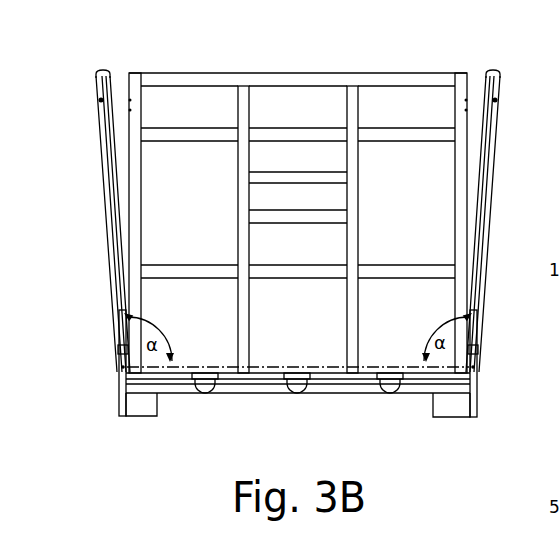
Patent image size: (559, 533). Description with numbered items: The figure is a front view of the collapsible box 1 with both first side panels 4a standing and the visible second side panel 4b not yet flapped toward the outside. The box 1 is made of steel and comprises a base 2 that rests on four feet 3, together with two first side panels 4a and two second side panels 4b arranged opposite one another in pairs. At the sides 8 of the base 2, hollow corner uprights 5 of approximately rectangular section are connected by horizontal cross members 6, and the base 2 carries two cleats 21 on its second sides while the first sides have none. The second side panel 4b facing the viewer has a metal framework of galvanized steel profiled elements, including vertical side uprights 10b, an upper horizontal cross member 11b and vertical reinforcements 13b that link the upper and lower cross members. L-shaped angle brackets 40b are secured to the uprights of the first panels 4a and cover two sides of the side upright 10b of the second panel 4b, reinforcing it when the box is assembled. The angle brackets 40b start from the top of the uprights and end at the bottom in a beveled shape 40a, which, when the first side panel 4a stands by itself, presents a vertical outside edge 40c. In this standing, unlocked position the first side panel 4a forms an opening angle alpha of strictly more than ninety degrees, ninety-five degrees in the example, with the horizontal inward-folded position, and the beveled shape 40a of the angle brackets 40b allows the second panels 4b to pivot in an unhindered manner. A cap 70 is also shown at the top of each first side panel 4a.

The collapsible box 1 is at (303, 318).
The base 2 is at (282, 402).
The foot 3 is at (162, 410).
The first side panel 4a is at (96, 214).
The second side panel 4b is at (215, 104).
The corner upright 5 is at (118, 386).
The horizontal cross member 6 is at (363, 390).
The side of the base 8 is at (338, 388).
The vertical side upright 10b is at (138, 192).
The upper horizontal cross member 11b is at (300, 82).
The vertical reinforcement 13b is at (356, 235).
The cleat 21 is at (207, 386).
The beveled shape 40a is at (118, 280).
The angle bracket 40b is at (110, 78).
The vertical outside edge 40c is at (130, 293).
The end cap 70 is at (100, 69).